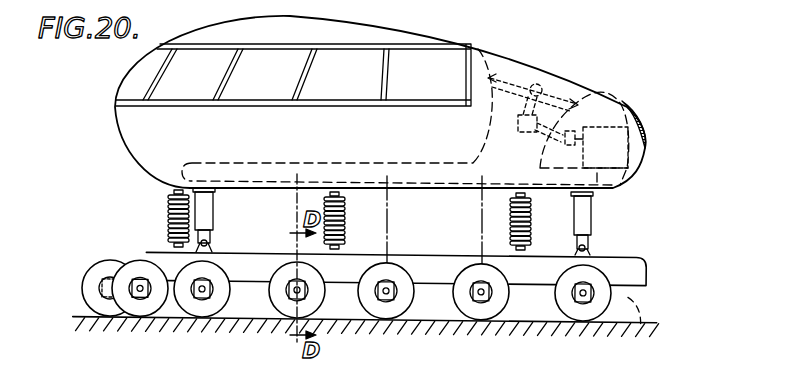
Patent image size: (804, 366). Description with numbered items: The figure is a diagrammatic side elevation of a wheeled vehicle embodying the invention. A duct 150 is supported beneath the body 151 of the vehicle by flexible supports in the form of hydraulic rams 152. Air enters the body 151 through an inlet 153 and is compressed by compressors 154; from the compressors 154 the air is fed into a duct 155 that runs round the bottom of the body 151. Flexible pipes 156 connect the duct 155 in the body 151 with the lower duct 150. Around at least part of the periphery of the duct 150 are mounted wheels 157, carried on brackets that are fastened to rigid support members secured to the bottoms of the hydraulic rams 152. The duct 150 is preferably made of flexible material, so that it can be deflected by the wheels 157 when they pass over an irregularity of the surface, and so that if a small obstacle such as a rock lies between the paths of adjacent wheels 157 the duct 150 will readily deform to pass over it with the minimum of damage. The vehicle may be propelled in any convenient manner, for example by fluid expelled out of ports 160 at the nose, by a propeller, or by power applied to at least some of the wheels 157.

The duct 150 is at (153, 252).
The body 151 is at (126, 135).
The hydraulic rams 152 is at (295, 200).
The inlet 153 is at (565, 82).
The compressors 154 is at (598, 88).
The duct 155 is at (370, 170).
The flexible pipes 156 is at (167, 205).
The wheels 157 is at (196, 307).
The ports 160 is at (637, 111).